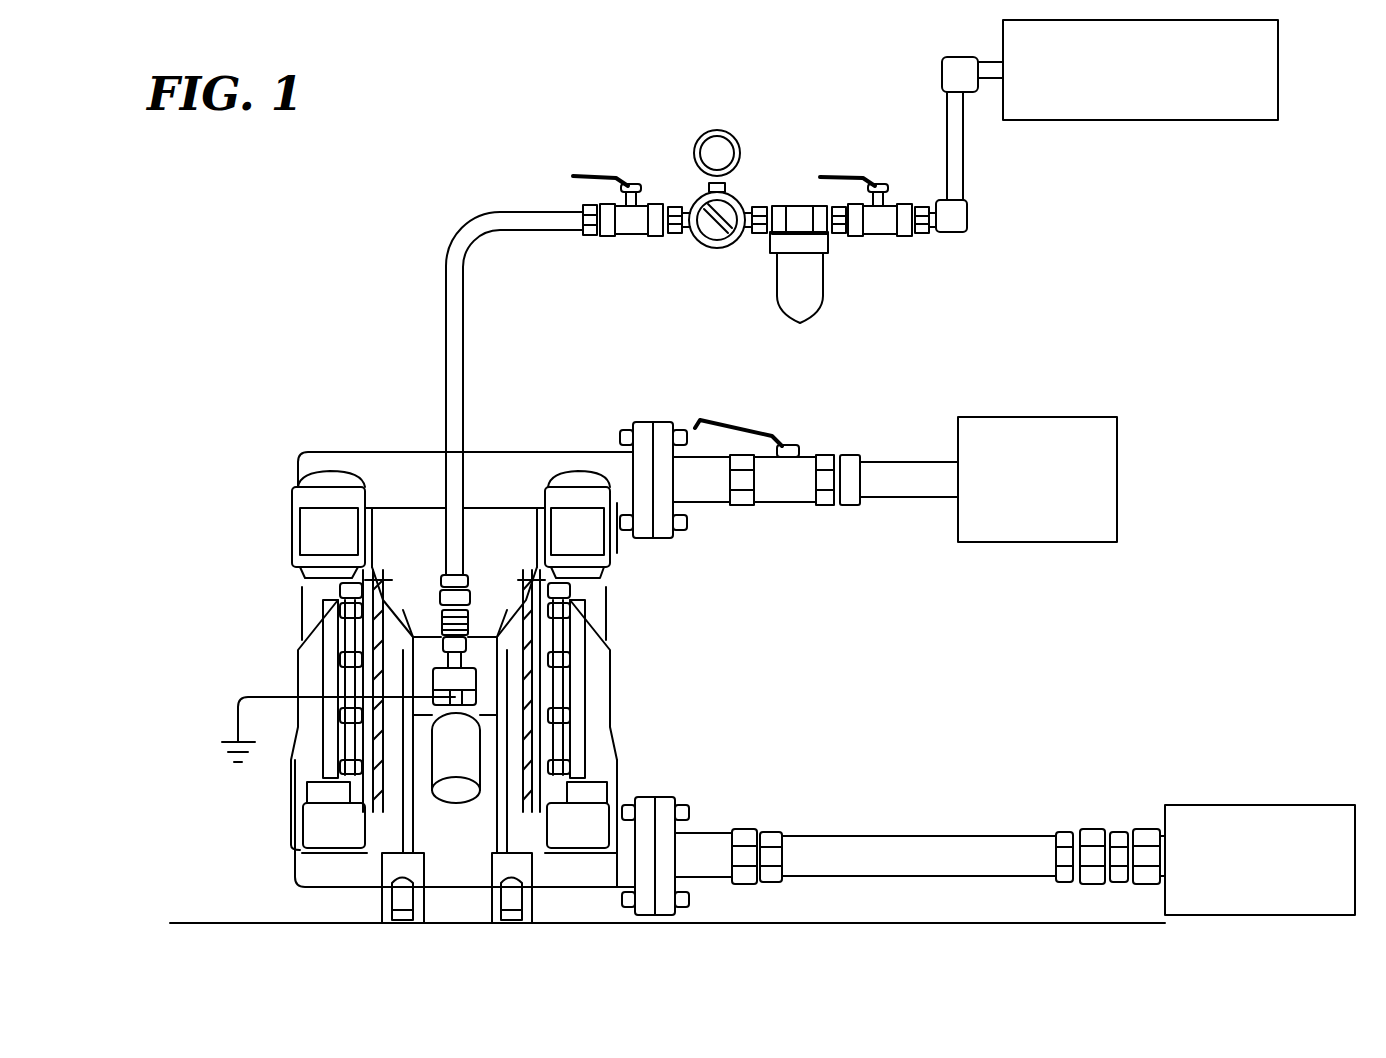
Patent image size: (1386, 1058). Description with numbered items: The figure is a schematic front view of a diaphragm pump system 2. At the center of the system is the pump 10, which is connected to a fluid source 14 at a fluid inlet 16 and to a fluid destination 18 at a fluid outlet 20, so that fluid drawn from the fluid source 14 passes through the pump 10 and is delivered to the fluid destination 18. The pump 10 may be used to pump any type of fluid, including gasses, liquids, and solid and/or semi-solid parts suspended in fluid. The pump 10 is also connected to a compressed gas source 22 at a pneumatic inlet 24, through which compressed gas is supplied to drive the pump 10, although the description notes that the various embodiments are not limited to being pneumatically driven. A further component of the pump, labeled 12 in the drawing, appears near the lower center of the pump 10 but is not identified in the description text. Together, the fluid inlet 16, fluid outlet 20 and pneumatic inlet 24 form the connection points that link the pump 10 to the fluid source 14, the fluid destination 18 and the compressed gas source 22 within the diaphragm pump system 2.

The diaphragm pump system 2 is at (466, 98).
The pump 10 is at (262, 580).
The center section 12 is at (461, 800).
The fluid source 14 is at (1322, 820).
The fluid inlet 16 is at (665, 812).
The fluid destination 18 is at (1103, 430).
The fluid outlet 20 is at (659, 548).
The compressed gas source 22 is at (1213, 100).
The pneumatic inlet 24 is at (470, 625).